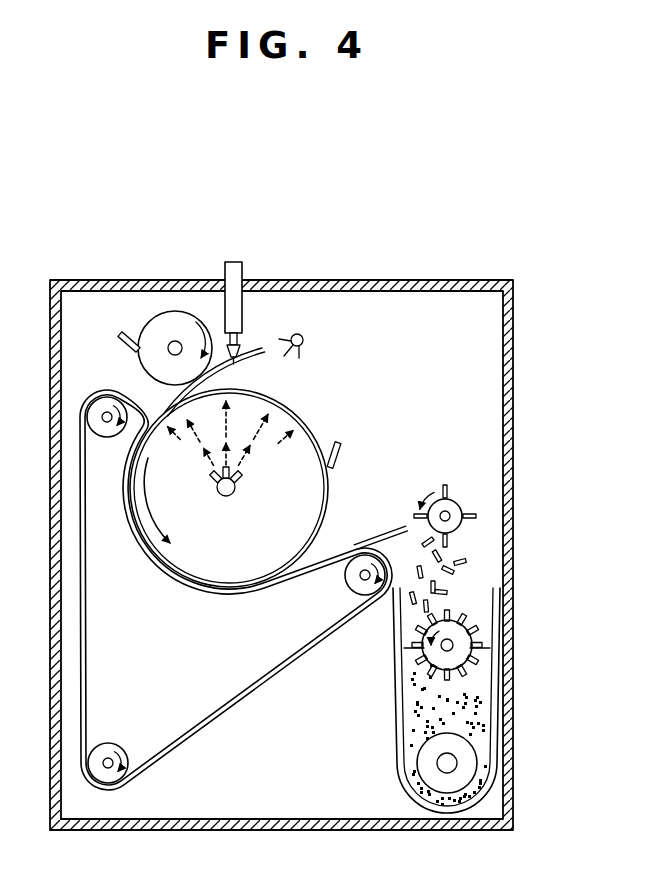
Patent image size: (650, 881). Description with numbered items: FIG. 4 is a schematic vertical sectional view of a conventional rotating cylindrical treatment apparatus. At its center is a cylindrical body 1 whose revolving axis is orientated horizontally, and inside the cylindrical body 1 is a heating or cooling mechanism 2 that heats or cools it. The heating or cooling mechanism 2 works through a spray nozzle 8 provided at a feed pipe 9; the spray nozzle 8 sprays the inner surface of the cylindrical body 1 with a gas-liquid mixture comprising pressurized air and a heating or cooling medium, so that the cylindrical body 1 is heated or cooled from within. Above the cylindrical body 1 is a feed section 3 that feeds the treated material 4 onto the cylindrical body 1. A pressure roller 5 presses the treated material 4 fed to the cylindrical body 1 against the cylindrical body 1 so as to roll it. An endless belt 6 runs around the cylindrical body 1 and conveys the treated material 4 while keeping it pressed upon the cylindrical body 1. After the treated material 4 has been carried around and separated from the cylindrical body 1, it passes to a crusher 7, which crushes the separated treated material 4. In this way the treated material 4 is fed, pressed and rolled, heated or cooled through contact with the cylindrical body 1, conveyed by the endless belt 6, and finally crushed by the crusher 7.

The cylindrical body 1 is at (305, 412).
The heating or cooling mechanism 2 is at (231, 498).
The feed section 3 is at (223, 312).
The treated material 4 is at (248, 362).
The pressure roller 5 is at (152, 322).
The endless belt 6 is at (88, 668).
The crusher 7 is at (455, 505).
The spray nozzle 8 is at (220, 470).
The feed pipe 9 is at (218, 497).